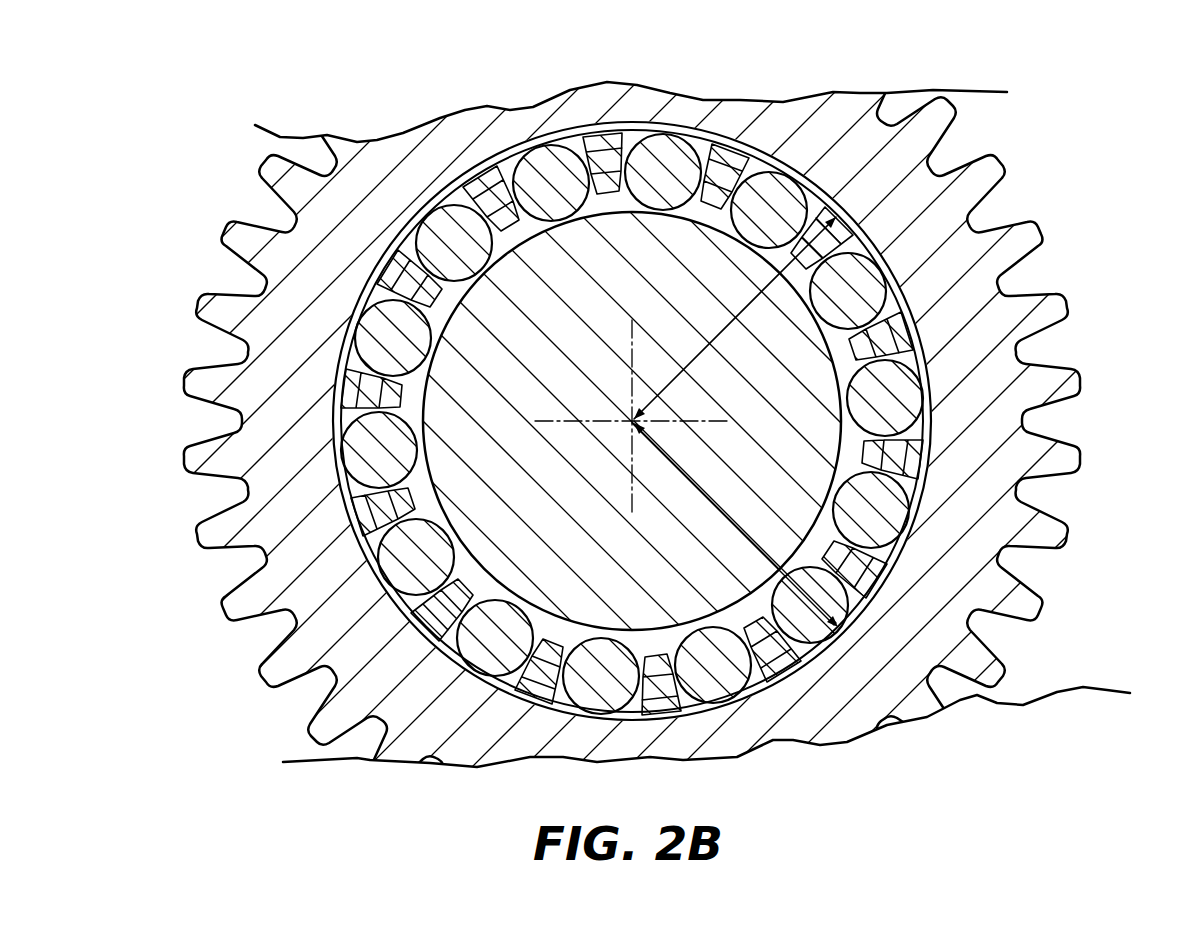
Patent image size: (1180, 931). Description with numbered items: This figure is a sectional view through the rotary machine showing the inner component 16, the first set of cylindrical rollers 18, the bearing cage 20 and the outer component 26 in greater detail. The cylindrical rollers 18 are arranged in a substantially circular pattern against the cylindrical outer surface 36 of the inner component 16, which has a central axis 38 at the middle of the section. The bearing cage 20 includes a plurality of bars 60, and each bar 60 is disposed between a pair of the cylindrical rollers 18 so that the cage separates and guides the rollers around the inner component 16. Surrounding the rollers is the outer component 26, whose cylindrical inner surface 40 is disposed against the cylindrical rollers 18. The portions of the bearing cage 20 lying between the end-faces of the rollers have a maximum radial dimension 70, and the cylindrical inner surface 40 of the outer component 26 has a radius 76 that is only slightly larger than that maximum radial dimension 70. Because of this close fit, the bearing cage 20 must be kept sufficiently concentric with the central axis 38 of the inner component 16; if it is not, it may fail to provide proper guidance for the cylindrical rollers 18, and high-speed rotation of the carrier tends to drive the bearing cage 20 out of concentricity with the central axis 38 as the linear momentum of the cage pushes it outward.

The inner component 16 is at (648, 565).
The cylindrical rollers 18 is at (680, 142).
The bearing cage 20 is at (722, 152).
The outer component 26 is at (980, 332).
The cylindrical outer surface 36 is at (850, 452).
The central axis 38 is at (632, 421).
The cylindrical inner surface 40 is at (875, 579).
The bars 60 is at (487, 200).
The maximum radial dimension 70 is at (751, 302).
The radius 76 is at (750, 547).